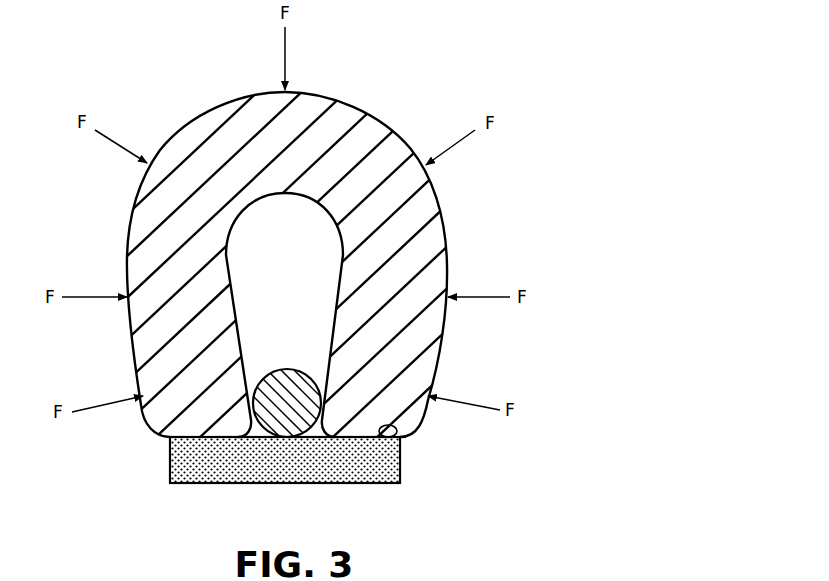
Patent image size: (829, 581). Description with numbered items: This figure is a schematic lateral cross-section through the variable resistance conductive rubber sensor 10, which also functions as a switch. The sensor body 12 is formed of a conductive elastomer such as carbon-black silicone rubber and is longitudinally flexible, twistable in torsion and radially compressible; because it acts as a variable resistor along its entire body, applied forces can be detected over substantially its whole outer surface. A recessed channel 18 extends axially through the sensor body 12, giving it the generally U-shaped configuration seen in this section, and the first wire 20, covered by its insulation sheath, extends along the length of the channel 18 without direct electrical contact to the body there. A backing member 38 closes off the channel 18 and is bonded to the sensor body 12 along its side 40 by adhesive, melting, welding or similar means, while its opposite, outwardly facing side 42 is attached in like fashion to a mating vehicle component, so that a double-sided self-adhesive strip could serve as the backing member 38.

The sensor 10 is at (400, 73).
The sensor body 12 is at (445, 219).
The recessed channel 18 is at (232, 298).
The first wire 20 is at (300, 373).
The backing member 38 is at (401, 463).
The side 40 is at (396, 427).
The outwardly facing side 42 is at (384, 484).